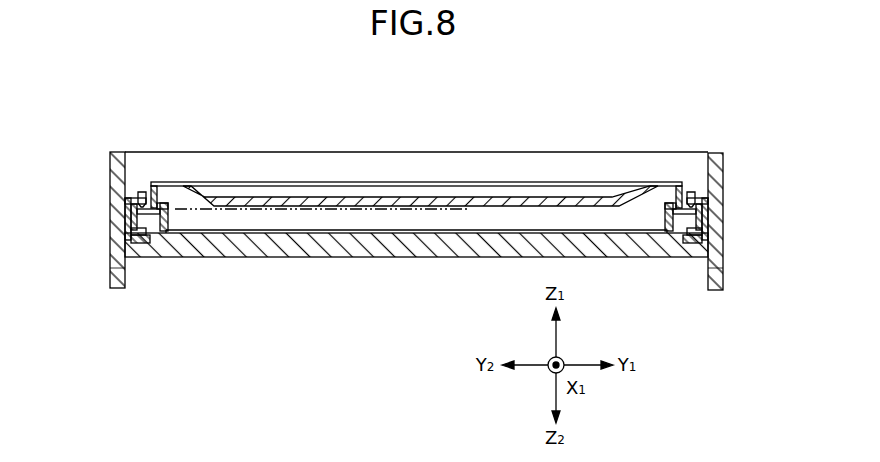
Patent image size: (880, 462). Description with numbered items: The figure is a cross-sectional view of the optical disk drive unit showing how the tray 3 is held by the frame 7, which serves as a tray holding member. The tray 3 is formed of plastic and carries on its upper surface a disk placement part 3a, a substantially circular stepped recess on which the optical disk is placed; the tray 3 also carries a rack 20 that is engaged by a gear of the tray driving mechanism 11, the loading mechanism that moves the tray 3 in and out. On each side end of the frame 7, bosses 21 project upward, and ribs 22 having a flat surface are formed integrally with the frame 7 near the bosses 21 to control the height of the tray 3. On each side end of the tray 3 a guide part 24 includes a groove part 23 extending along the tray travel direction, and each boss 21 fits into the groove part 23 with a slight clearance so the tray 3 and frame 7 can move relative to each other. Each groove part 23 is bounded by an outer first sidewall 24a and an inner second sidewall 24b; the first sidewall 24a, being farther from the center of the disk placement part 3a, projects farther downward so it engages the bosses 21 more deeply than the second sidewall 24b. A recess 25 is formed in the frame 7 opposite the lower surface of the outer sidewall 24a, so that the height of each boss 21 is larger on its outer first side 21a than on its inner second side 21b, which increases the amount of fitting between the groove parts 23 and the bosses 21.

The tray 3 is at (168, 182).
The disk placement part 3a is at (385, 197).
The frame 7 is at (117, 184).
The tray driving mechanism 11 is at (470, 233).
The rack 20 is at (172, 206).
The boss 21 is at (421, 264).
The first side of boss 21a is at (131, 222).
The second side of boss 21b is at (168, 229).
The rib 22 is at (139, 195).
The groove part 23 is at (137, 236).
The guide part 24 is at (416, 208).
The first sidewall 24a is at (127, 233).
The second sidewall 24b is at (150, 241).
The recess 25 is at (115, 274).